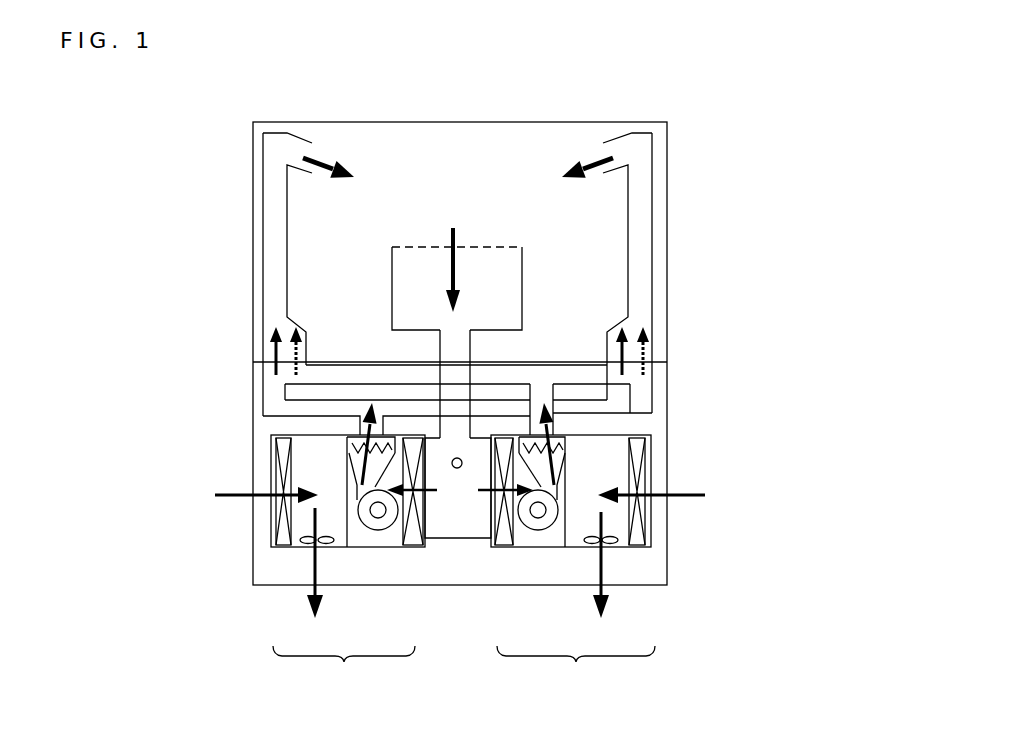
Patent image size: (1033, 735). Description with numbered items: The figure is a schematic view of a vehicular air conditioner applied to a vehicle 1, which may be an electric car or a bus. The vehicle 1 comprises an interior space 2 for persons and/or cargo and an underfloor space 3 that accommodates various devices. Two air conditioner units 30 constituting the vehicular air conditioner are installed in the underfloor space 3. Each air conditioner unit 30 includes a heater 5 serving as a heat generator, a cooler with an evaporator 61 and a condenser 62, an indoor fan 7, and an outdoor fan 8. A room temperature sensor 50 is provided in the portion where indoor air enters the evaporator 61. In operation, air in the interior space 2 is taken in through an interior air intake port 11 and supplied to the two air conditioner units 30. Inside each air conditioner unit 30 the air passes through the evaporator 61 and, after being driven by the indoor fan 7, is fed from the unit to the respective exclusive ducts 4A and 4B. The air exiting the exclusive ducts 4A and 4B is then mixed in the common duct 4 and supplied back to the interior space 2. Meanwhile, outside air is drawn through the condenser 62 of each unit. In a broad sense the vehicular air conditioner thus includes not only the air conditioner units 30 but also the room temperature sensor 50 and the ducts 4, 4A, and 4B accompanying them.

The vehicle 1 is at (672, 227).
The interior space 2 is at (442, 167).
The underfloor space 3 is at (651, 475).
The common duct 4 is at (271, 309).
The exclusive duct 4A is at (276, 407).
The exclusive duct 4B is at (293, 383).
The heater 5 is at (366, 443).
The indoor fan 7 is at (370, 547).
The outdoor fan 8 is at (330, 547).
The interior air intake port 11 is at (513, 280).
The air conditioner unit 30 is at (464, 671).
The room temperature sensor 50 is at (457, 468).
The evaporator 61 is at (407, 547).
The condenser 62 is at (280, 547).